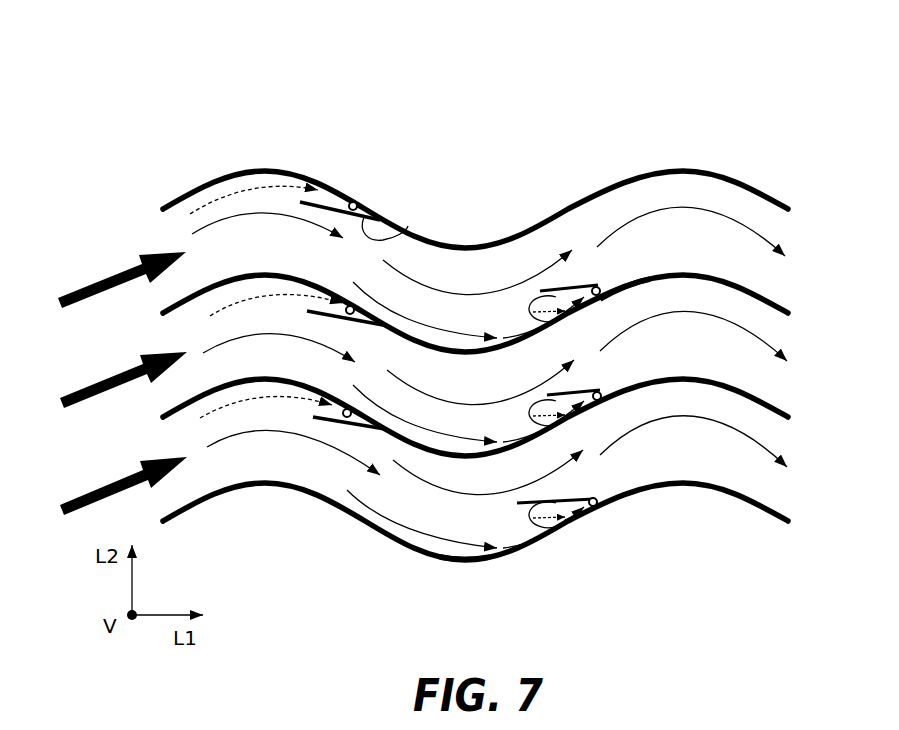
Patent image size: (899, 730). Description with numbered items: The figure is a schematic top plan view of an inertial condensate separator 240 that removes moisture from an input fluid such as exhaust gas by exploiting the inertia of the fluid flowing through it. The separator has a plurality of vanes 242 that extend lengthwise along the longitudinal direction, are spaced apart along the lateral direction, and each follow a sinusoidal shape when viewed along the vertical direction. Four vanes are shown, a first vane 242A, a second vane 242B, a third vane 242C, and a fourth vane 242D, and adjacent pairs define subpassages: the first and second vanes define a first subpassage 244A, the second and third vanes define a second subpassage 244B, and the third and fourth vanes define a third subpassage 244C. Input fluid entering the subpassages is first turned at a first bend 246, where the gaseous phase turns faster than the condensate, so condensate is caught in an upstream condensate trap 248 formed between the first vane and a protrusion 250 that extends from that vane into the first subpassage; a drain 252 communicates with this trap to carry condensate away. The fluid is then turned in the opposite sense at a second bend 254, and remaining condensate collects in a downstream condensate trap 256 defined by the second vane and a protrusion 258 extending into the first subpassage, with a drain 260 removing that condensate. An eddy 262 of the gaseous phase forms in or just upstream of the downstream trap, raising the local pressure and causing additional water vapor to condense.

The inertial condensate separator 240 is at (600, 83).
The vanes 242 is at (727, 533).
The first vane 242A is at (789, 207).
The second vane 242B is at (790, 312).
The third vane 242C is at (790, 415).
The fourth vane 242D is at (790, 519).
The first subpassage 244A is at (172, 240).
The second subpassage 244B is at (193, 322).
The third subpassage 244C is at (187, 425).
The first bend 246 is at (272, 138).
The upstream condensate trap 248 is at (331, 185).
The protrusion 250 is at (409, 228).
The drain 252 is at (363, 197).
The second bend 254 is at (473, 568).
The downstream condensate trap 256 is at (572, 285).
The protrusion 258 is at (625, 278).
The drain 260 is at (597, 280).
The eddy 262 is at (532, 288).